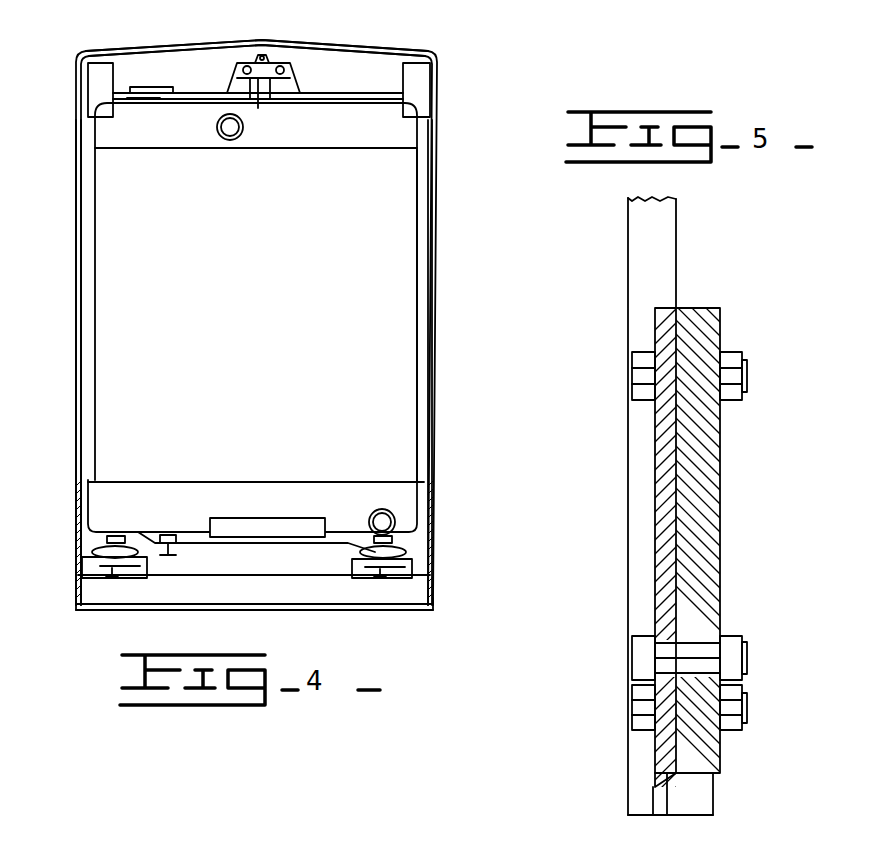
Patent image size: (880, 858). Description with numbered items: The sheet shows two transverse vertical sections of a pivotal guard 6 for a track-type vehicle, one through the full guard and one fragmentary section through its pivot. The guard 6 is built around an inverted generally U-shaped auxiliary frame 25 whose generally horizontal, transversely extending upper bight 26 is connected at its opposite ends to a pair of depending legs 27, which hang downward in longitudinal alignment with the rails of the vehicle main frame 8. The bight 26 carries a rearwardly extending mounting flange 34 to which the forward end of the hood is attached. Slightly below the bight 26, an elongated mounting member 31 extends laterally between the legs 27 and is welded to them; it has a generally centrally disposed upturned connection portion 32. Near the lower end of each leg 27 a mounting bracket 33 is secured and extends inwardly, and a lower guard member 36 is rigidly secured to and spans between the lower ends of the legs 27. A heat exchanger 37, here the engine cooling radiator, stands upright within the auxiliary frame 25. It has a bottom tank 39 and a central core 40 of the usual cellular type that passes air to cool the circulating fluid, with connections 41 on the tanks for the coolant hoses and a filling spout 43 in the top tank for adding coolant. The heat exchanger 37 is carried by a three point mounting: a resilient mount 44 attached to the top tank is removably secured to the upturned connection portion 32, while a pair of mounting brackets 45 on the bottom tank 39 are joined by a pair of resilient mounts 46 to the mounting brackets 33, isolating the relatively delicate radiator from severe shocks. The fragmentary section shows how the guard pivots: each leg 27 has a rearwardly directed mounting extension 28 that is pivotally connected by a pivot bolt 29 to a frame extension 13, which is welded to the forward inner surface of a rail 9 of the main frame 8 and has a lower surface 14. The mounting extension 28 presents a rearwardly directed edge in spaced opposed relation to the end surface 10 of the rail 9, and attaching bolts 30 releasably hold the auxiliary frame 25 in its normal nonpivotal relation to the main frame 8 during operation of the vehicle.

In FIG. 4, the pivotal guard 6 is at (464, 76).
In FIG. 5, the main frame 8 is at (702, 233).
In FIG. 5, the rail 9 is at (640, 303).
In FIG. 5, the end surface 10 is at (632, 468).
In FIG. 5, the frame extension 13 is at (715, 322).
In FIG. 5, the lower surface 14 is at (705, 803).
In FIG. 4, the auxiliary frame 25 is at (444, 214).
In FIG. 4, the upper bight 26 is at (203, 45).
In FIG. 4, the depending leg 27 is at (76, 268).
In FIG. 4, the mounting extension 28 is at (76, 612).
In FIG. 5, the mounting extension 28 is at (658, 520).
In FIG. 5, the pivot bolt 29 is at (712, 656).
In FIG. 5, the attaching bolt 30 is at (740, 396).
In FIG. 4, the mounting member 31 is at (354, 93).
In FIG. 4, the upturned connection portion 32 is at (287, 78).
In FIG. 4, the mounting bracket 33 is at (100, 578).
In FIG. 4, the mounting flange 34 is at (132, 52).
In FIG. 4, the lower guard member 36 is at (200, 612).
In FIG. 4, the heat exchanger 37 is at (417, 370).
In FIG. 4, the bottom tank 39 is at (102, 495).
In FIG. 4, the central core 40 is at (410, 250).
In FIG. 4, the connection 41 is at (217, 127).
In FIG. 4, the filling spout 43 is at (152, 93).
In FIG. 4, the resilient mount 44 is at (258, 108).
In FIG. 4, the mounting bracket 45 is at (108, 540).
In FIG. 4, the resilient mount 46 is at (100, 553).